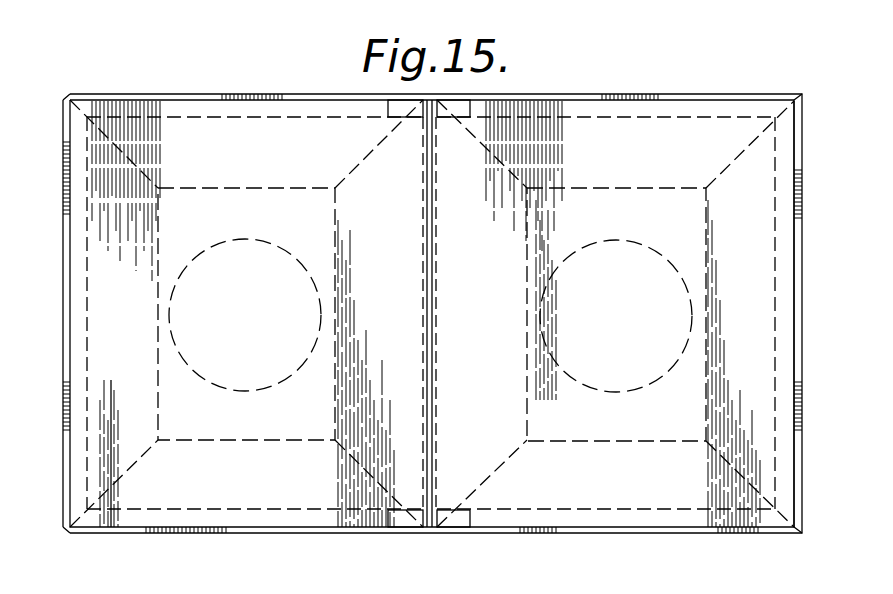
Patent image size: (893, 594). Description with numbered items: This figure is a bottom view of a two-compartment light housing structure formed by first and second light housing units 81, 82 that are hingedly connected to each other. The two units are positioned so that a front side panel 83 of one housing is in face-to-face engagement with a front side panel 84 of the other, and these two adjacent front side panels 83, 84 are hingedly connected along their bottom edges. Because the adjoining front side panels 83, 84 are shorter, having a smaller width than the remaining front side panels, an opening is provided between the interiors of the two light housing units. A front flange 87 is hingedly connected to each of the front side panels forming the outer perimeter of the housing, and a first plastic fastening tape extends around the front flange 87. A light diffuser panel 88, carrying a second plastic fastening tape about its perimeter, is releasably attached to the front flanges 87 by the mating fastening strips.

The first light housing unit 81 is at (157, 84).
The second light housing unit 82 is at (738, 84).
The front side panel 83 is at (428, 266).
The front side panel 84 is at (437, 266).
The front flange 87 is at (803, 213).
The light diffuser panel 88 is at (628, 135).